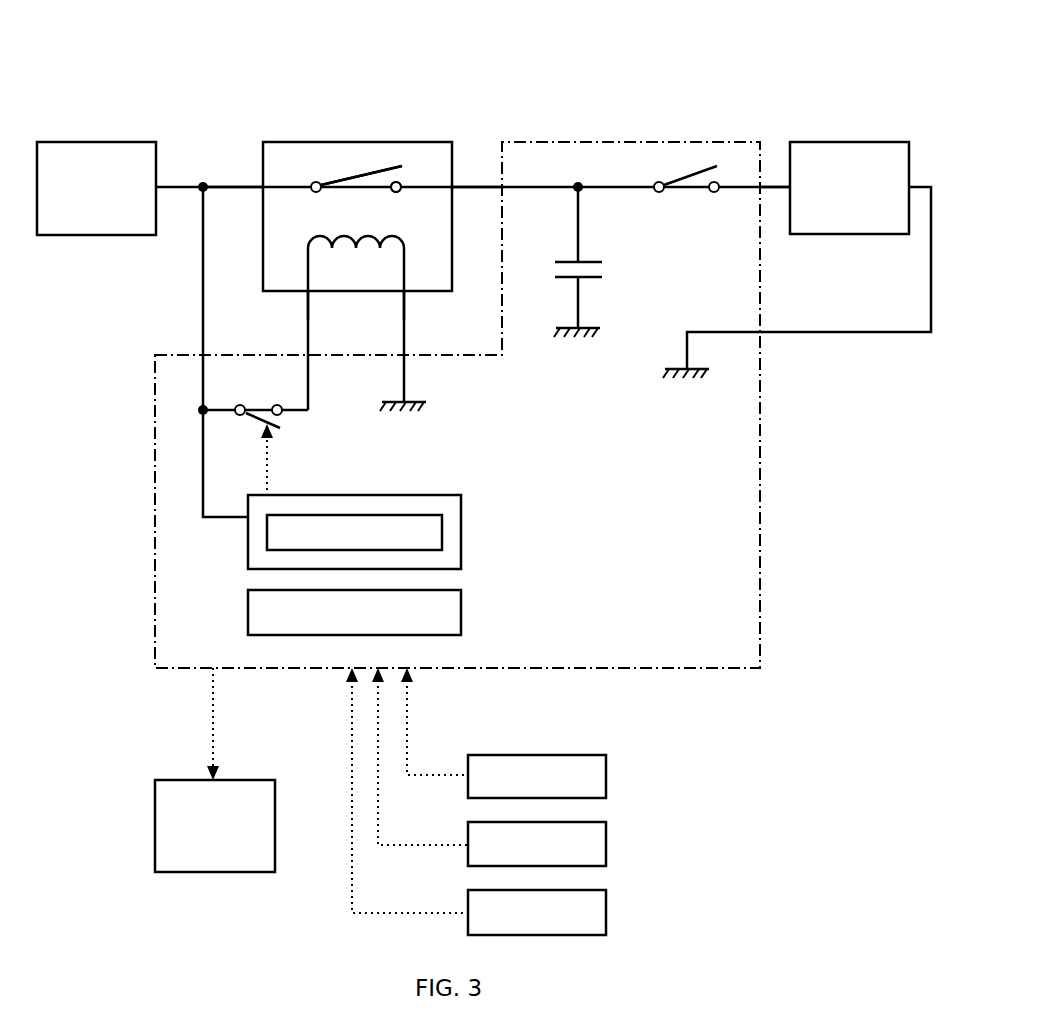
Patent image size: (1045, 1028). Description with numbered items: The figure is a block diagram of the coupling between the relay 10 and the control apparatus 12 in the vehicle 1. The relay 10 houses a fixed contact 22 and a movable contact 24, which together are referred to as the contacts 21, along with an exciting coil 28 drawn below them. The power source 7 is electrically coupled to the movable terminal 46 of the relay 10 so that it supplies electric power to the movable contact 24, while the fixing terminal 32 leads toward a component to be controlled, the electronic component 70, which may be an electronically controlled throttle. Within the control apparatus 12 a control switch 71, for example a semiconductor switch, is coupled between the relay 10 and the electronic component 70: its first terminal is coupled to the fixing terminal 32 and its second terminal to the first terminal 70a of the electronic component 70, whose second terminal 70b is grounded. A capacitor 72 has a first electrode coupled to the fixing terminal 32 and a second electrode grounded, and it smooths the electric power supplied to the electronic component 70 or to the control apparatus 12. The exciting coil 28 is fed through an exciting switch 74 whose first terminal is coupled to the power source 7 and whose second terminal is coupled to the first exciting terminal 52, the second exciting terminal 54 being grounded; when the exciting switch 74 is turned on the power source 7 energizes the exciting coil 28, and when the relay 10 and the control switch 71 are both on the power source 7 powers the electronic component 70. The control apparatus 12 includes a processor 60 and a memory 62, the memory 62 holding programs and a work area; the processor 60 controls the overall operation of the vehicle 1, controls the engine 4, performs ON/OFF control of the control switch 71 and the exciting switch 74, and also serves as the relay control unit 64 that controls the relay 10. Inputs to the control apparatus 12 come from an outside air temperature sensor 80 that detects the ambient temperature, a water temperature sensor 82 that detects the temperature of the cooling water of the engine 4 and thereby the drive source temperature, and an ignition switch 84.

The vehicle 1 is at (608, 58).
The engine 4 is at (155, 827).
The power source 7 is at (100, 142).
The relay 10 is at (290, 142).
The control apparatus 12 is at (155, 377).
The contacts 21 is at (341, 77).
The fixed contact 22 is at (403, 185).
The movable contact 24 is at (356, 170).
The exciting coil 28 is at (318, 237).
The fixing terminal 32 is at (454, 177).
The movable terminal 46 is at (262, 185).
The first exciting terminal 52 is at (308, 291).
The second exciting terminal 54 is at (404, 291).
The processor 60 is at (248, 538).
The memory 62 is at (248, 617).
The relay control unit 64 is at (267, 540).
The electronic component 70 is at (853, 142).
The first terminal of the electronic component 70a is at (790, 186).
The second terminal of the electronic component 70b is at (909, 185).
The control switch 71 is at (686, 170).
The capacitor 72 is at (597, 278).
The exciting switch 74 is at (255, 425).
The outside air temperature sensor 80 is at (606, 775).
The water temperature sensor 82 is at (606, 843).
The ignition switch 84 is at (606, 911).